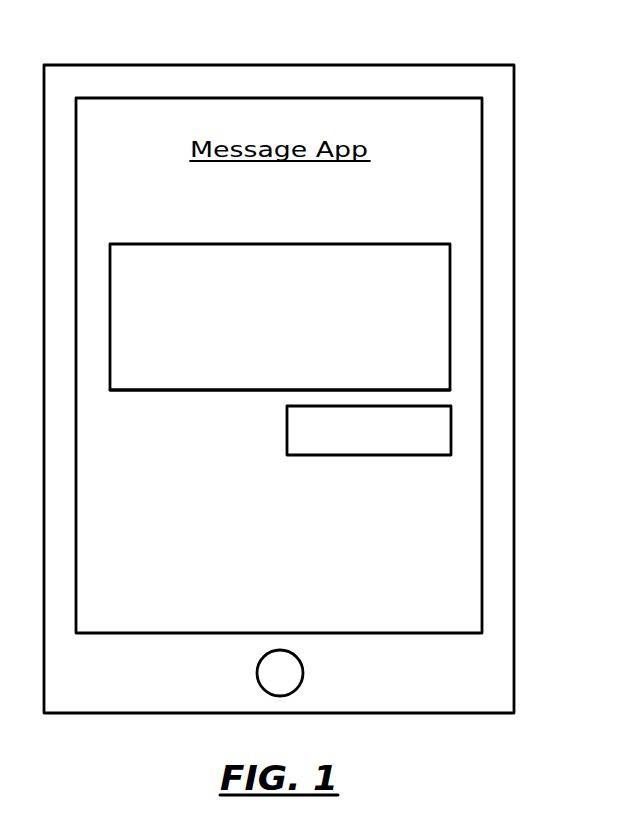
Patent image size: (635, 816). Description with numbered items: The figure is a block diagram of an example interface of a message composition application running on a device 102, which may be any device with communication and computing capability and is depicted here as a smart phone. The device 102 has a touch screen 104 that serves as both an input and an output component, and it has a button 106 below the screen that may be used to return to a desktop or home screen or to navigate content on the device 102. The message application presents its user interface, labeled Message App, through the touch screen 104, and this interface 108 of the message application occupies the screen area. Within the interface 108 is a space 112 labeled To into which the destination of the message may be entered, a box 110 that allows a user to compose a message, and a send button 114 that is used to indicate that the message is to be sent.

The device 102 is at (465, 65).
The touch screen 104 is at (483, 236).
The button 106 is at (302, 665).
The message application interface 108 is at (465, 308).
The box 110 is at (142, 390).
The space 112 is at (158, 196).
The send button 114 is at (335, 455).